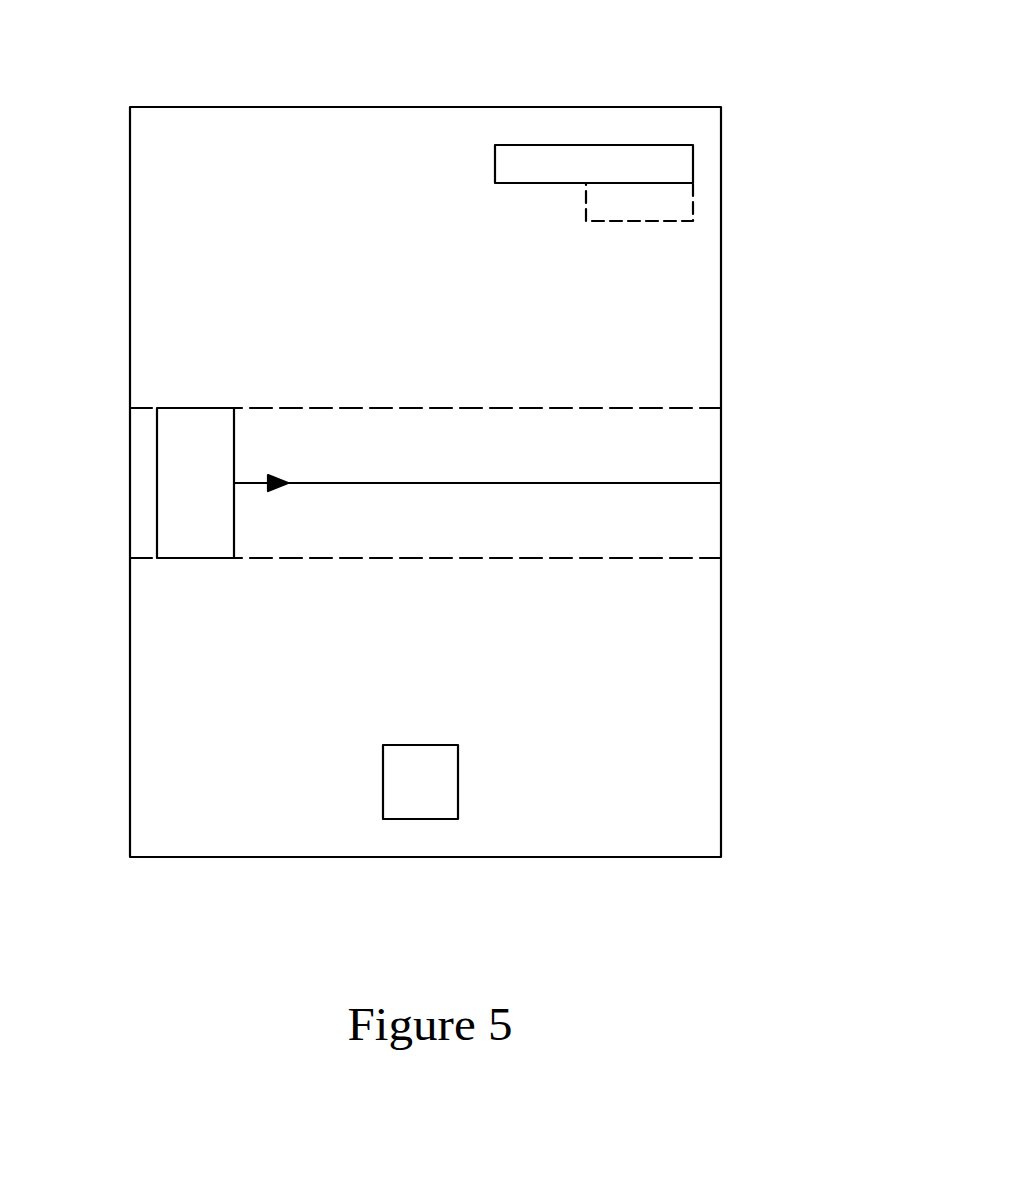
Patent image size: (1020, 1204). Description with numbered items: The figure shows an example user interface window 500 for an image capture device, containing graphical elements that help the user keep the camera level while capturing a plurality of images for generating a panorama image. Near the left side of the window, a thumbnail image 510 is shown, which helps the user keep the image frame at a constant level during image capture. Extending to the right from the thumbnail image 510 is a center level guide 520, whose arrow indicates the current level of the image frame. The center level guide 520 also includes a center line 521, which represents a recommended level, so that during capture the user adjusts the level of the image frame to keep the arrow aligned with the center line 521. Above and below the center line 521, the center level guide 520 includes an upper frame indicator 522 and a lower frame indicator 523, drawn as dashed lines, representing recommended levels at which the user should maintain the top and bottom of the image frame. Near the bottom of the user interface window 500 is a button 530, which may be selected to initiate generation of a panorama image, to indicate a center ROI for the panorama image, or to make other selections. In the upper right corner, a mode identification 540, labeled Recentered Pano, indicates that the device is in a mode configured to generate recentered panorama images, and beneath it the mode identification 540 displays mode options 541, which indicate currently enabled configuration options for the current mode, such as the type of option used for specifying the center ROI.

The user interface window 500 is at (258, 107).
The thumbnail image 510 is at (157, 487).
The center level guide 520 is at (290, 484).
The center line 521 is at (450, 483).
The upper frame indicator 522 is at (712, 408).
The lower frame indicator 523 is at (712, 558).
The button 530 is at (425, 820).
The mode identification 540 is at (636, 145).
The mode options 541 is at (693, 200).